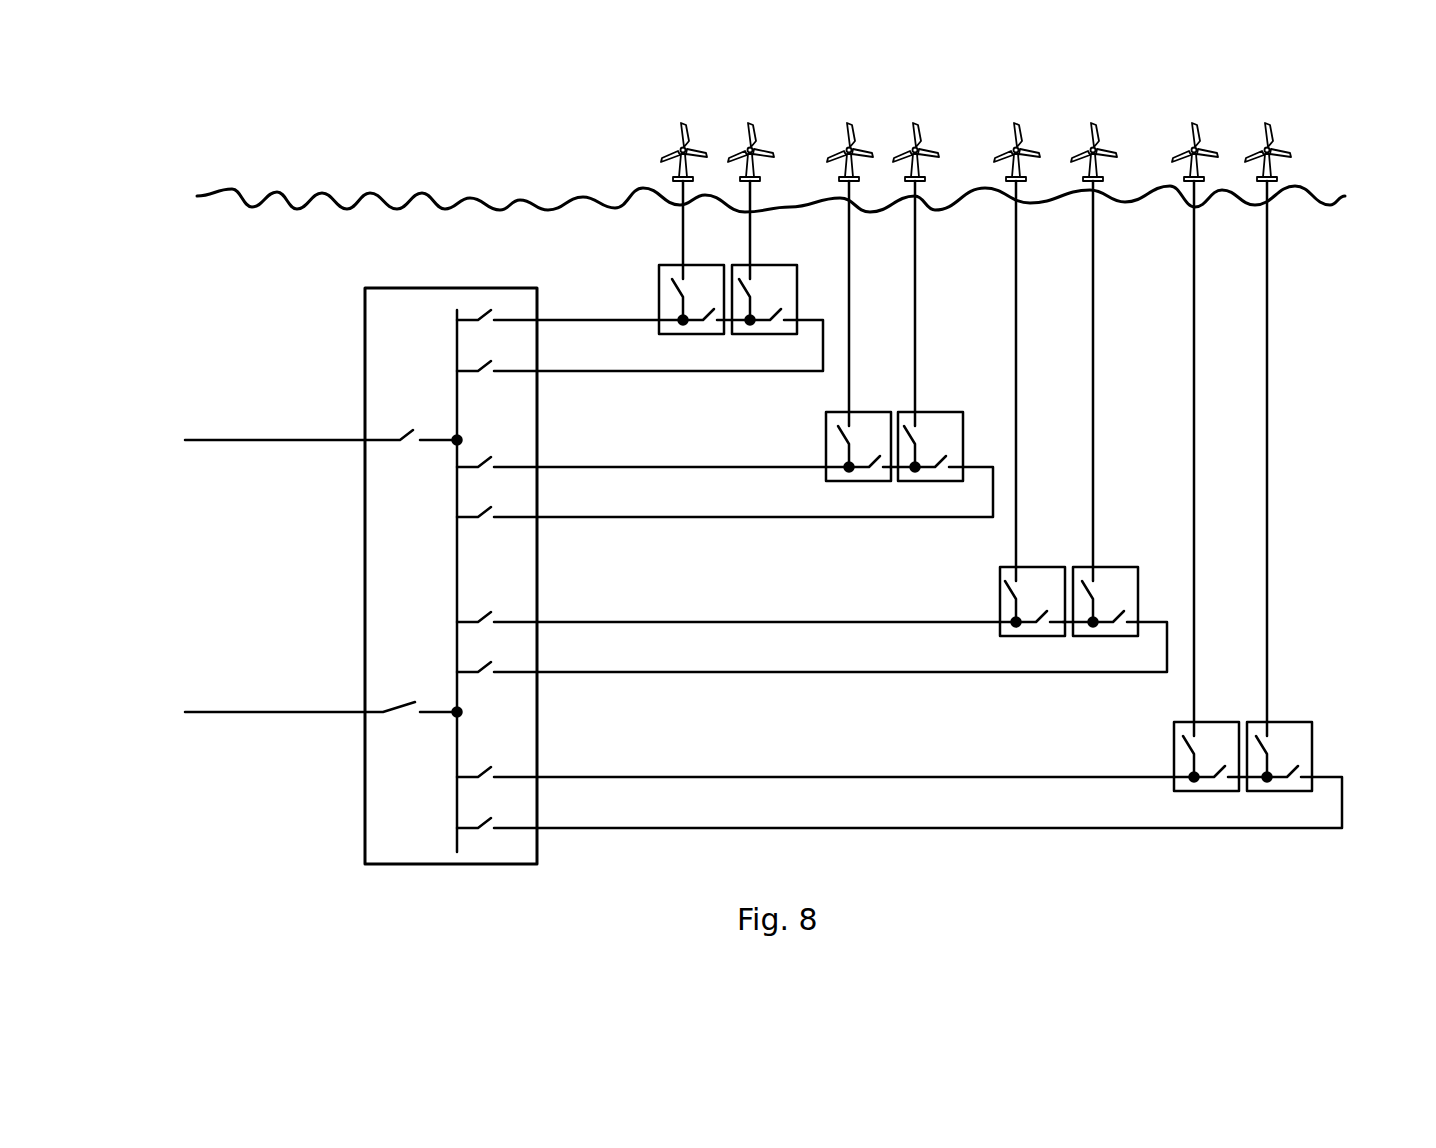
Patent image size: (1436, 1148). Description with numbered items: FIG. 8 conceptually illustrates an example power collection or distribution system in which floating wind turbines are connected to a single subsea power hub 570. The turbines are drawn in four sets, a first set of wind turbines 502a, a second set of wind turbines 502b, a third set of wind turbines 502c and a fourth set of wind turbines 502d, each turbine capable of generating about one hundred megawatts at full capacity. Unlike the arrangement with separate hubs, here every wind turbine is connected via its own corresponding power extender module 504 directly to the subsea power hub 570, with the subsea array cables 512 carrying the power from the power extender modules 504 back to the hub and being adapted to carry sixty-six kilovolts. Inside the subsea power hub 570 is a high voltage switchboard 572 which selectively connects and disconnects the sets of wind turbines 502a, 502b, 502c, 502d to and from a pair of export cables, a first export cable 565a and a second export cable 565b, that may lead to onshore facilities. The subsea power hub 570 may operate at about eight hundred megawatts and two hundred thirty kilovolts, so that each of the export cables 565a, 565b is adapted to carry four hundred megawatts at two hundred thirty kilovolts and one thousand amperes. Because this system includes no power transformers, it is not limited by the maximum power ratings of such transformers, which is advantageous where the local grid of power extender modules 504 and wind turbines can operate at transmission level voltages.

The first set of wind turbines 502a is at (738, 137).
The second set of wind turbines 502b is at (898, 130).
The third set of wind turbines 502c is at (1061, 128).
The fourth set of wind turbines 502d is at (1240, 115).
The power extender module 504 is at (648, 288).
The subsea array cable 512 is at (1284, 834).
The first export cable 565a is at (214, 433).
The second export cable 565b is at (231, 703).
The subsea power hub 570 is at (402, 552).
The high voltage switchboard 572 is at (424, 322).